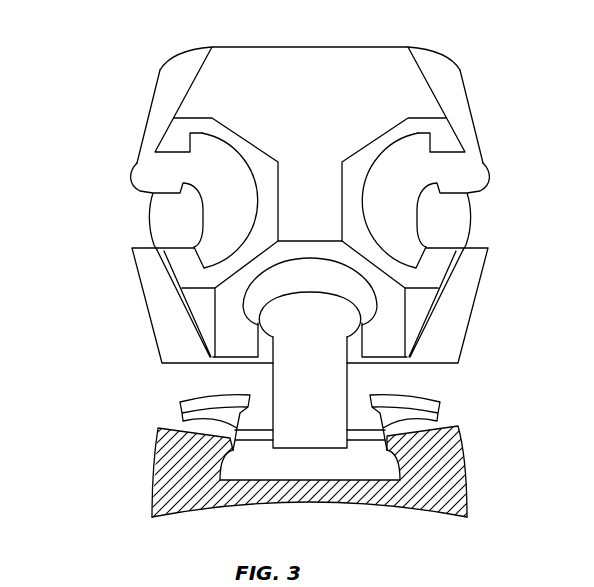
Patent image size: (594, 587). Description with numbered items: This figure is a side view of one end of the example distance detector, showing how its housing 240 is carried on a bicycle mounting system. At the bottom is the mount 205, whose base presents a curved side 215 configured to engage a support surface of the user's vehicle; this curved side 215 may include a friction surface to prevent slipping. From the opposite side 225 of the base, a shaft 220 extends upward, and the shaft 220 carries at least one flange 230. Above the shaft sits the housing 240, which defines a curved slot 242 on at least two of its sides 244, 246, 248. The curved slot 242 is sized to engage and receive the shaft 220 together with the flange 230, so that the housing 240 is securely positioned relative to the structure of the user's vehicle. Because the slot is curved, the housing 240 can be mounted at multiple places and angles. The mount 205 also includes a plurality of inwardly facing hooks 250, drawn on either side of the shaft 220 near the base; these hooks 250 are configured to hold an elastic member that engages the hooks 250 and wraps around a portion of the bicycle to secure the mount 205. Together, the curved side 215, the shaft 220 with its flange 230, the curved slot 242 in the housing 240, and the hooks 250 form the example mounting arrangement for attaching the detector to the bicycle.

The mount 205 is at (148, 502).
The curved side 215 is at (262, 505).
The shaft 220 is at (272, 378).
The side 225 is at (358, 465).
The flange 230 is at (258, 336).
The housing 240 is at (182, 65).
The curved slot 242 is at (230, 215).
The side 244 is at (142, 108).
The side 246 is at (476, 112).
The side 248 is at (440, 368).
The inwardly facing hooks 250 is at (234, 440).